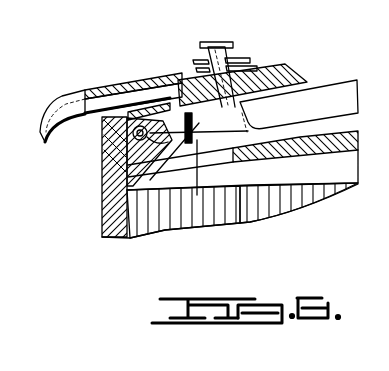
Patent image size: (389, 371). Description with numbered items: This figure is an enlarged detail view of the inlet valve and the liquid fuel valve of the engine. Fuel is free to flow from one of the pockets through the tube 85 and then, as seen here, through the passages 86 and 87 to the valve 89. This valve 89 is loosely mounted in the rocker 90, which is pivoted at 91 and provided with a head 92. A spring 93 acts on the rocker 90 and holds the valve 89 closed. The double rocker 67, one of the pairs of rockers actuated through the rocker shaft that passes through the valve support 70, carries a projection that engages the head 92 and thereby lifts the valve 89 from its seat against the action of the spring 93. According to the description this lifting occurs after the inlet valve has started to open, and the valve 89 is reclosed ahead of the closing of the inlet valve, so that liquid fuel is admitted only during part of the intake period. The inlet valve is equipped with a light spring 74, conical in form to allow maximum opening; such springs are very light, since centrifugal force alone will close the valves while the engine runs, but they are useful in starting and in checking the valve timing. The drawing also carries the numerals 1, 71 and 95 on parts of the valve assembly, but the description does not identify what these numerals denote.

The body 1 is at (101, 236).
The double rocker 67 is at (351, 84).
The valve support 70 is at (100, 138).
The lower plate 71 is at (300, 166).
The light spring 74 is at (240, 60).
The tube 85 is at (68, 117).
The passage 86 is at (142, 100).
The passage 87 is at (176, 107).
The valve 89 is at (183, 212).
The rocker 90 is at (102, 178).
The pivot 91 is at (103, 153).
The head 92 is at (278, 203).
The spring 93 is at (102, 198).
The hatched plate 95 is at (236, 112).